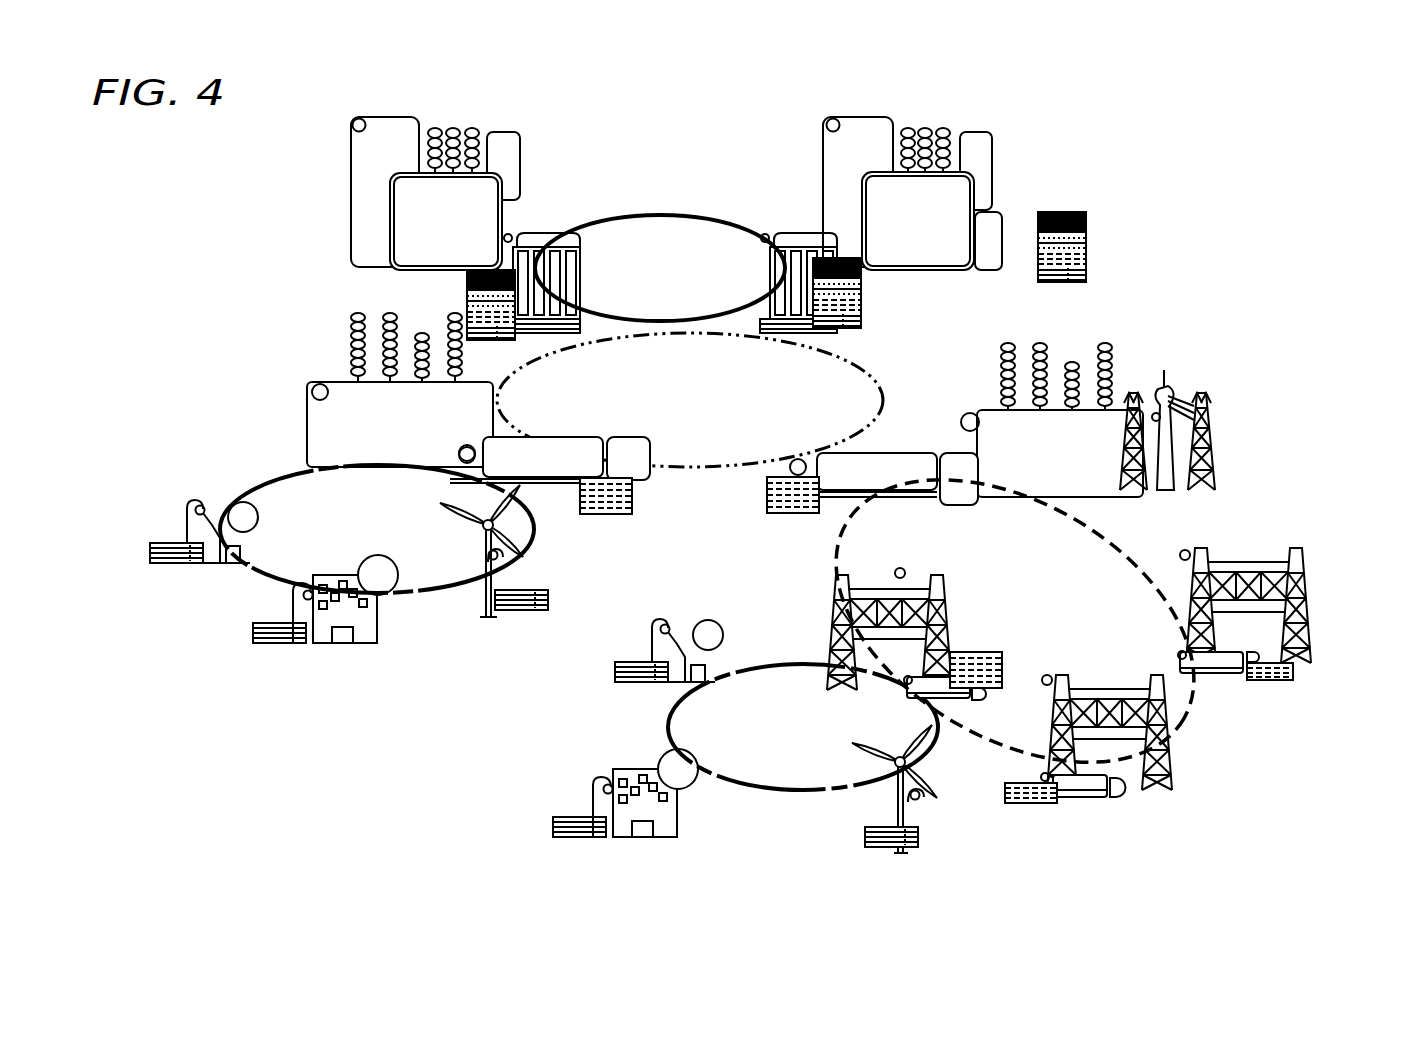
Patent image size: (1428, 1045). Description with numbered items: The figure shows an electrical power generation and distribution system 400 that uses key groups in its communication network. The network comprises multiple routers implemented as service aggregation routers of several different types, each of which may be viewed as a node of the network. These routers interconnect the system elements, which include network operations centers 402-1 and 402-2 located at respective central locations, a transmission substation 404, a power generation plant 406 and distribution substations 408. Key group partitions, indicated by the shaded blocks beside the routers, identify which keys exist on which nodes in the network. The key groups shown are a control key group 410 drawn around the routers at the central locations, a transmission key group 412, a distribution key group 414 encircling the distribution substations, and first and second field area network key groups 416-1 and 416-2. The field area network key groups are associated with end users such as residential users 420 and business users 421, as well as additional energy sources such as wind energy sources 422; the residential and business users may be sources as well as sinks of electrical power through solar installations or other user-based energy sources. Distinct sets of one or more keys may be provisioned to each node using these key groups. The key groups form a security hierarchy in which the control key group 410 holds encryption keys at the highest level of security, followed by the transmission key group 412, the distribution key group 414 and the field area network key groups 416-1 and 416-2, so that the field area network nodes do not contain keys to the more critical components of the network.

The electrical power generation and distribution system 400 is at (414, 752).
The network operations center 402-1 is at (336, 189).
The network operations center 402-2 is at (1008, 164).
The transmission substation 404 is at (320, 351).
The power generation plant 406 is at (1160, 371).
The distribution substations 408 is at (1334, 604).
The control key group 410 is at (662, 213).
The transmission key group 412 is at (878, 378).
The distribution key group 414 is at (1136, 546).
The first field area network key group 416-1 is at (268, 488).
The second field area network key group 416-2 is at (668, 726).
The residential users 420 is at (258, 528).
The business users 421 is at (380, 623).
The wind energy sources 422 is at (526, 582).